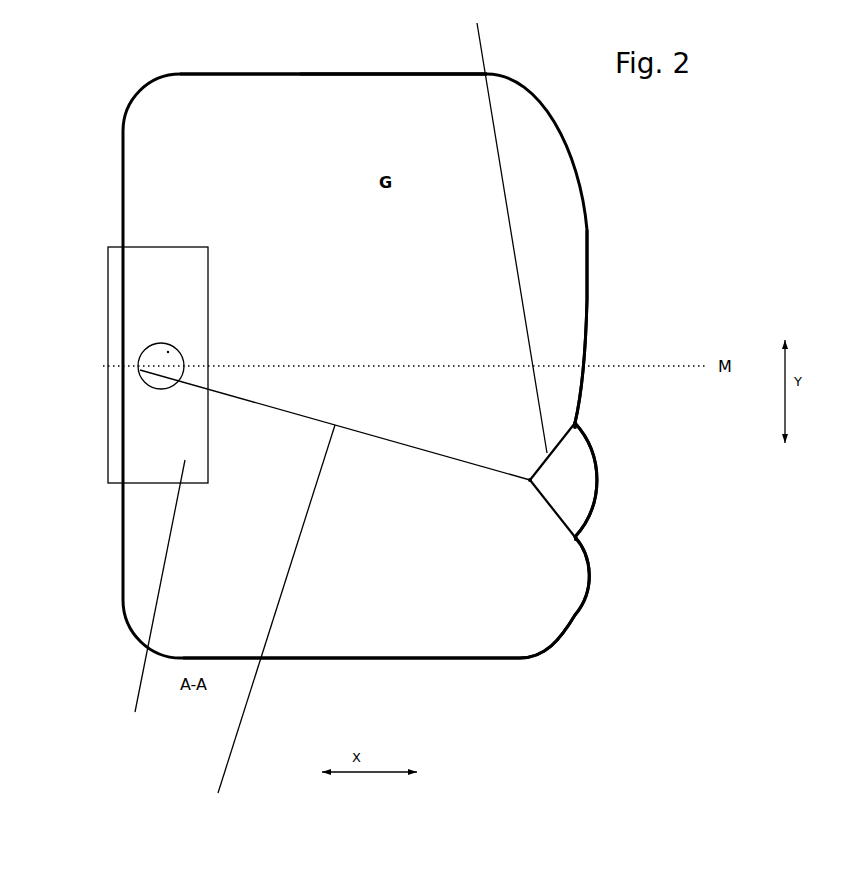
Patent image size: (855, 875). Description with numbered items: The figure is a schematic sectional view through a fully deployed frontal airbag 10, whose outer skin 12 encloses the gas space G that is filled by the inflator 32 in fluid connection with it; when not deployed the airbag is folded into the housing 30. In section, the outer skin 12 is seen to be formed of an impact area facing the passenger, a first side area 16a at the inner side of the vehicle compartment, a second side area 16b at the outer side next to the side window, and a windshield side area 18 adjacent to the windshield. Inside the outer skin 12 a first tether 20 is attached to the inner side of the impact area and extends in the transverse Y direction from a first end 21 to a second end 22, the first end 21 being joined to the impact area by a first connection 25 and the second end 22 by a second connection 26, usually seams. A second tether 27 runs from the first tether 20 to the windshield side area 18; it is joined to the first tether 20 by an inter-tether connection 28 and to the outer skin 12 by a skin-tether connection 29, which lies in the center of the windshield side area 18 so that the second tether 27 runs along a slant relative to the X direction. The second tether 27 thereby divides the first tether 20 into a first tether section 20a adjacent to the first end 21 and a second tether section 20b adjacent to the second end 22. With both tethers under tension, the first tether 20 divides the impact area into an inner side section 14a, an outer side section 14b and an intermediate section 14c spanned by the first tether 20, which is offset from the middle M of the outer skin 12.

The frontal airbag 10 is at (586, 223).
The outer skin 12 is at (232, 72).
The inner side section 14a is at (590, 592).
The outer side section 14b is at (587, 352).
The intermediate section 14c is at (595, 487).
The first side area 16a is at (368, 661).
The second side area 16b is at (340, 72).
The windshield side area 18 is at (123, 310).
The first tether 20 is at (507, 229).
The first tether section 20a is at (547, 500).
The second tether section 20b is at (555, 448).
The first end 21 is at (577, 540).
The second end 22 is at (568, 423).
The first connection 25 is at (577, 540).
The second connection 26 is at (572, 427).
The second tether 27 is at (267, 625).
The inter-tether connection 28 is at (530, 480).
The skin-tether connection 29 is at (140, 370).
The housing 30 is at (146, 598).
The inflator 32 is at (168, 352).